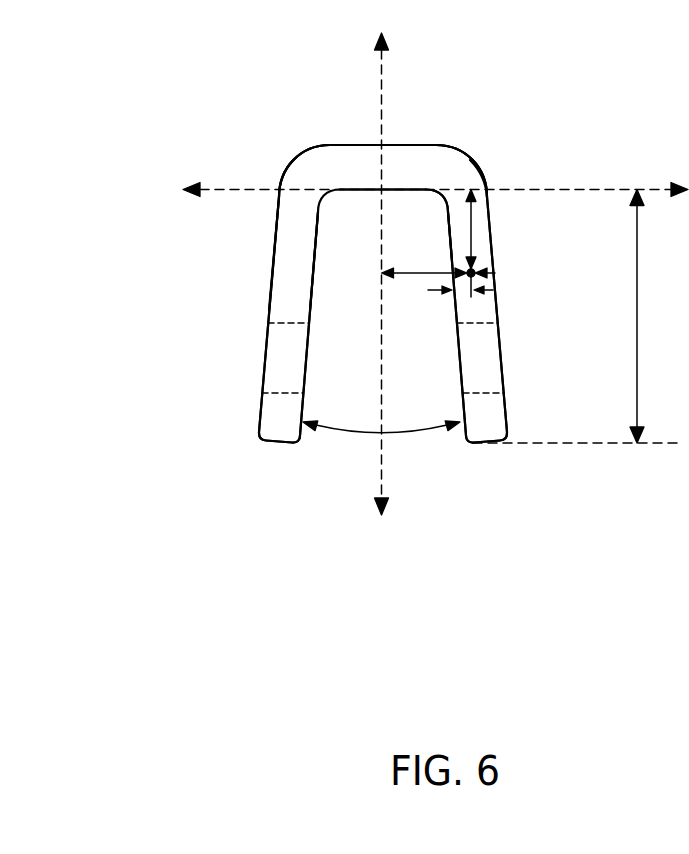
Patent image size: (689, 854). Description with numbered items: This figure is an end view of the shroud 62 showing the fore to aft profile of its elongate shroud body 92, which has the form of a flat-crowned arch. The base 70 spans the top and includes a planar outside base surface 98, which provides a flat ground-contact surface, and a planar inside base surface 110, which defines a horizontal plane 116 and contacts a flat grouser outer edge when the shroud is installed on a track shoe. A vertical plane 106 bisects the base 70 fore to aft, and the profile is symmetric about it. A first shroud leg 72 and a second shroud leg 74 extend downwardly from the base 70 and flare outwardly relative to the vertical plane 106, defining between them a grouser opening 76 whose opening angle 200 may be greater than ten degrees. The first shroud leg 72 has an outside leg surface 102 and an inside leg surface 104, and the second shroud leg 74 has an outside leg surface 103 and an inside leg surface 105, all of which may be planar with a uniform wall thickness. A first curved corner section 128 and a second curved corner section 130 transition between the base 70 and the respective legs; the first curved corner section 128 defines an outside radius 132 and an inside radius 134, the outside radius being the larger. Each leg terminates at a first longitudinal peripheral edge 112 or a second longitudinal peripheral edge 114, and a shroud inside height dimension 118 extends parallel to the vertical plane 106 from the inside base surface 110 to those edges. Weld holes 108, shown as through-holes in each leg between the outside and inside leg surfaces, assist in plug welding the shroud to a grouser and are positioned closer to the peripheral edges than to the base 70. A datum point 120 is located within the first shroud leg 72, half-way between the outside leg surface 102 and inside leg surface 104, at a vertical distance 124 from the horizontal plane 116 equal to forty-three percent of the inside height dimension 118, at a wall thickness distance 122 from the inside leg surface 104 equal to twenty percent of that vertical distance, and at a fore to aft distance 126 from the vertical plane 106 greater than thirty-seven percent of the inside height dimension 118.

The shroud 62 is at (564, 152).
The base 70 is at (353, 158).
The first shroud leg 72 is at (493, 366).
The second shroud leg 74 is at (271, 348).
The grouser opening 76 is at (403, 438).
The elongate shroud body 92 is at (437, 146).
The outside base surface 98 is at (392, 145).
The outside leg surface 102 is at (497, 275).
The outside leg surface 103 is at (270, 278).
The inside leg surface 104 is at (447, 235).
The inside leg surface 105 is at (312, 278).
The vertical plane 106 is at (381, 83).
The weld holes 108 is at (300, 388).
The inside base surface 110 is at (353, 192).
The first longitudinal peripheral edge 112 is at (485, 445).
The second longitudinal peripheral edge 114 is at (272, 444).
The horizontal plane 116 is at (600, 189).
The shroud inside height dimension 118 is at (575, 317).
The datum point 120 is at (487, 270).
The wall thickness distance 122 is at (460, 292).
The vertical distance 124 is at (476, 220).
The fore to aft distance 126 is at (413, 278).
The first curved corner section 128 is at (466, 180).
The second curved corner section 130 is at (318, 152).
The outside radius 132 is at (474, 157).
The inside radius 134 is at (432, 200).
The angle 200 is at (357, 433).